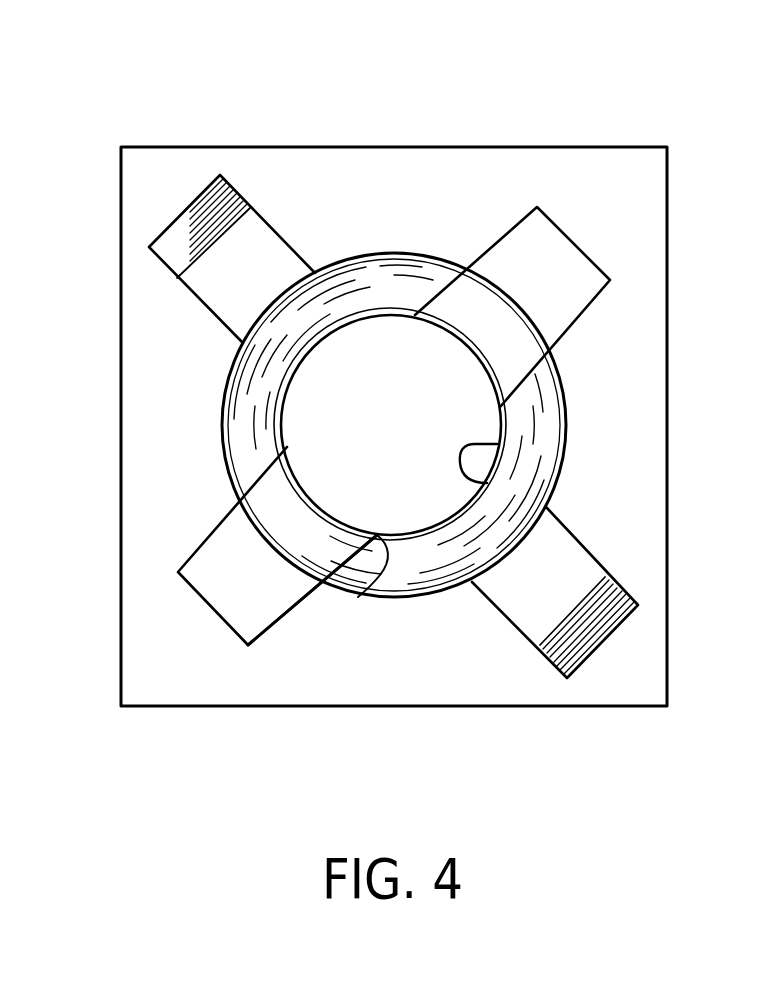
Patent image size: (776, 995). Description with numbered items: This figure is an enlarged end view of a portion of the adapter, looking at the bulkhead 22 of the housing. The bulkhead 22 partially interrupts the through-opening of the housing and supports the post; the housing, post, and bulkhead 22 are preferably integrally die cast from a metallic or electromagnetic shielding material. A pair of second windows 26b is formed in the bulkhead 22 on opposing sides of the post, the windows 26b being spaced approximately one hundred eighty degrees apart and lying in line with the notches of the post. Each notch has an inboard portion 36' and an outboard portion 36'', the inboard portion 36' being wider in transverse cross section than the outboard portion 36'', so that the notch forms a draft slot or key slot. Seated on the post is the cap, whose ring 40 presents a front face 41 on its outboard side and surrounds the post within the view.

The bulkhead 22 is at (628, 583).
The second windows 26b is at (545, 275).
The outboard portion 36'' is at (578, 307).
The inboard portion 36' is at (596, 463).
The ring 40 is at (440, 573).
The front face 41 is at (354, 597).